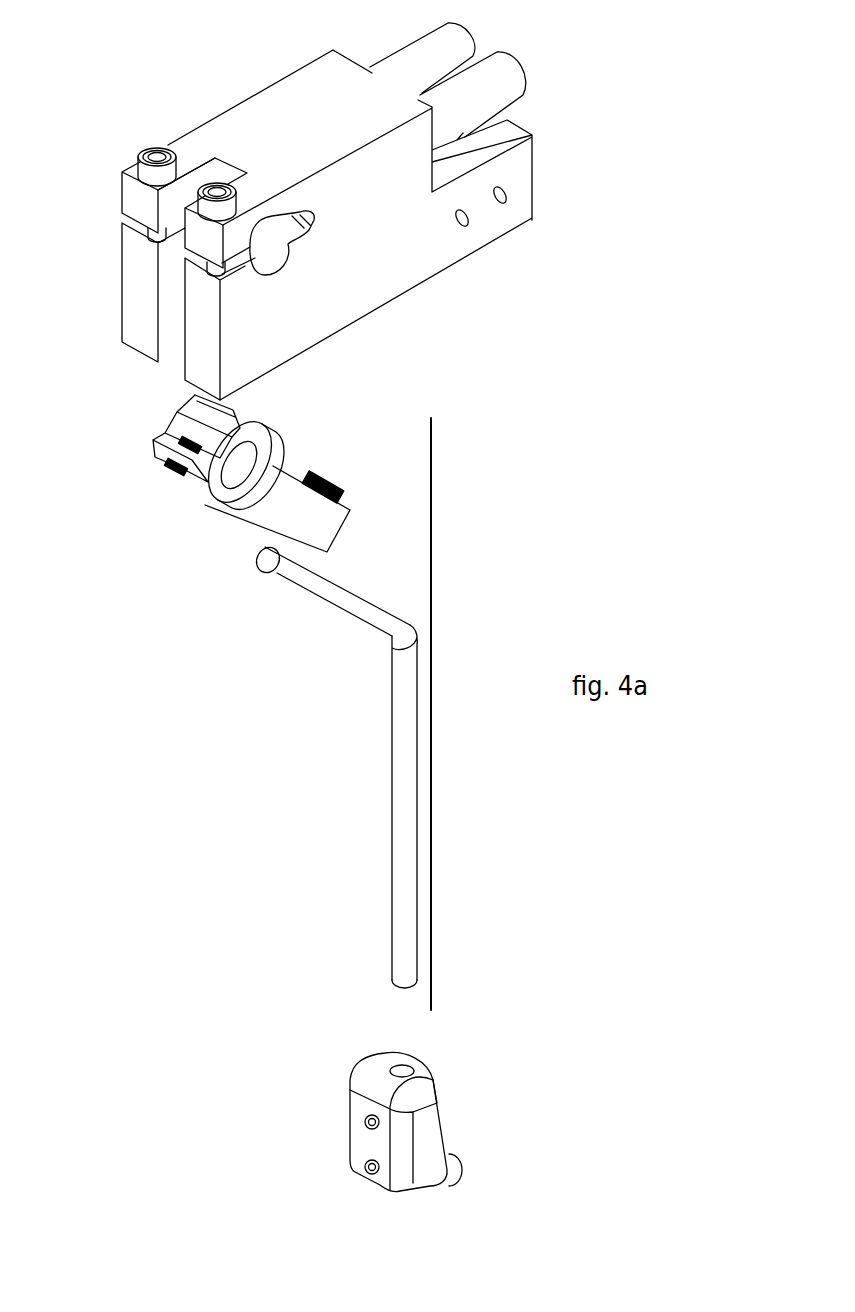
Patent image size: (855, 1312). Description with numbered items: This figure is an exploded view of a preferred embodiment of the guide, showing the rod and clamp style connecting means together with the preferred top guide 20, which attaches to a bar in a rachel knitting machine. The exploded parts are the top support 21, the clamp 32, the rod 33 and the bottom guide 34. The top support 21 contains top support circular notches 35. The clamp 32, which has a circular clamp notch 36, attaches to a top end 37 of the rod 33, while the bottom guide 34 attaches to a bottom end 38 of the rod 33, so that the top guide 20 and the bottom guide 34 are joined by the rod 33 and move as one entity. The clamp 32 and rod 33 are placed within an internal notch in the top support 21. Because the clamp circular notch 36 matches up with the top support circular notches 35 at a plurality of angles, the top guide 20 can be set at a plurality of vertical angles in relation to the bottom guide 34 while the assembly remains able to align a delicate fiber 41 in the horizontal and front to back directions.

The top guide 20 is at (503, 312).
The top support 21 is at (250, 113).
The top support circular notches 35 is at (273, 247).
The clamp 32 is at (150, 452).
The clamp circular notch 36 is at (243, 463).
The top end of rod 37 is at (290, 569).
The rod 33 is at (397, 727).
The bottom end of rod 38 is at (400, 969).
The delicate fiber 41 is at (432, 833).
The bottom guide 34 is at (348, 1150).